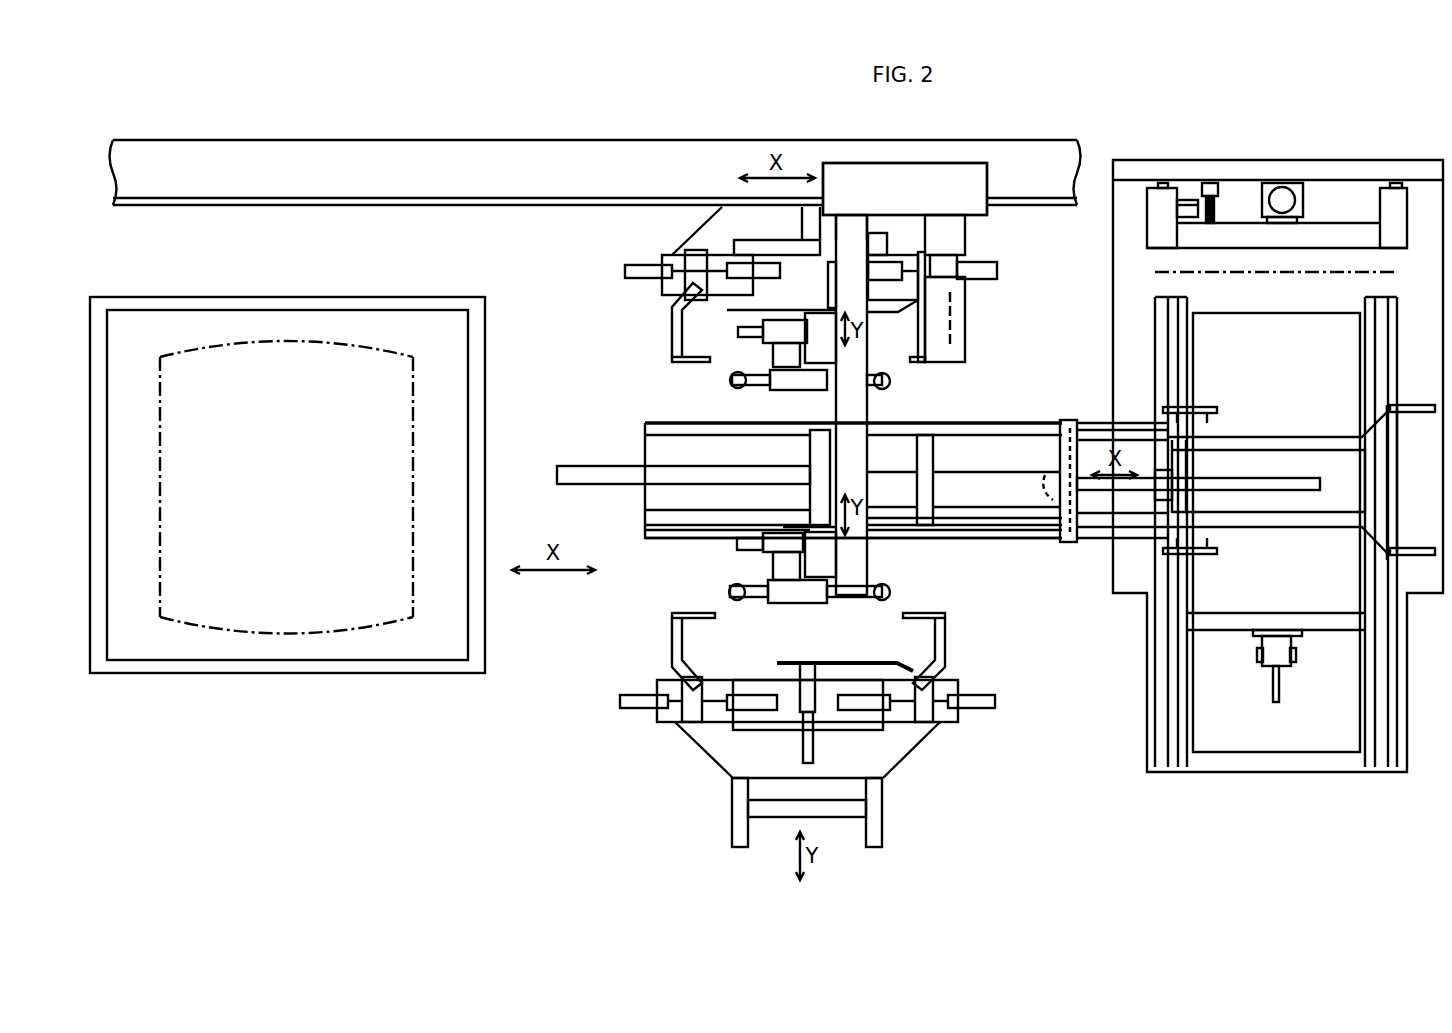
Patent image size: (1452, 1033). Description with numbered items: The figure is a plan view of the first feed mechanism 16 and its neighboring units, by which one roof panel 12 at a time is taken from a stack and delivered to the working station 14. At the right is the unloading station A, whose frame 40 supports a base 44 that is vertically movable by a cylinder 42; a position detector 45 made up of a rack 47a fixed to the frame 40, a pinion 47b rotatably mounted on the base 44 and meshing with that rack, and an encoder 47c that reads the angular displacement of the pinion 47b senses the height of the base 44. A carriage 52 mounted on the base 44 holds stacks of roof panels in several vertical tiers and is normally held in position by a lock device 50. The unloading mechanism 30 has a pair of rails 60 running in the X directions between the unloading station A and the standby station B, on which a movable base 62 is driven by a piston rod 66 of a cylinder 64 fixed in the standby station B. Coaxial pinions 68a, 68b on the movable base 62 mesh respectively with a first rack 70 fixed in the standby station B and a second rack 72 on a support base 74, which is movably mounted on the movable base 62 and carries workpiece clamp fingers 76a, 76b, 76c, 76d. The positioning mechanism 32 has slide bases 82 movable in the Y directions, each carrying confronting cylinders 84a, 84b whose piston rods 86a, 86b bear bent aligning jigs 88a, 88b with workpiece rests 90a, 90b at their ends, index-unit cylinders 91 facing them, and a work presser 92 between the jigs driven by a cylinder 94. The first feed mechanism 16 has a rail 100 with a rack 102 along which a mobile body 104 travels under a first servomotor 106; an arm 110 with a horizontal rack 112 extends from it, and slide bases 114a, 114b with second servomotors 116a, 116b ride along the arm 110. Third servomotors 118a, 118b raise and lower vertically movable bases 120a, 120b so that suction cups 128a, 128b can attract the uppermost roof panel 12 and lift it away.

The roof panel 12 is at (340, 627).
The working station 14 is at (265, 722).
The first feed mechanism 16 is at (906, 182).
The unloading mechanism 30 is at (1090, 415).
The positioning mechanism 32 is at (959, 608).
The frame 40 is at (1340, 165).
The cylinder 42 is at (1280, 187).
The base 44 is at (1400, 258).
The position detector 45 is at (1188, 190).
The rack 47a is at (1209, 183).
The pinion 47b is at (1210, 228).
The encoder 47c is at (1180, 212).
The lock device 50 is at (1300, 640).
The carriage 52 is at (1397, 285).
The rails 60 is at (913, 435).
The movable base 62 is at (1033, 525).
The cylinder 64 is at (580, 483).
The piston rod 66 is at (947, 472).
The pinion 68a is at (1053, 500).
The pinion 68b is at (1053, 490).
The first rack 70 is at (990, 533).
The second rack 72 is at (1235, 474).
The support base 74 is at (1297, 527).
The workpiece clamp finger 76a is at (1425, 400).
The workpiece clamp finger 76b is at (1432, 557).
The workpiece clamp finger 76c is at (1207, 410).
The workpiece clamp finger 76d is at (1218, 554).
The slide base 82 is at (718, 232).
The cylinder 84a is at (634, 272).
The cylinder 84b is at (987, 272).
The piston rod 86a is at (925, 722).
The piston rod 86b is at (675, 718).
The aligning jig 88a is at (940, 645).
The aligning jig 88b is at (672, 640).
The workpiece rest 90a is at (912, 613).
The workpiece rest 90b is at (701, 613).
The cylinder 91 is at (758, 705).
The work presser 92 is at (810, 675).
The cylinder 94 is at (815, 740).
The rail 100 is at (484, 155).
The rack 102 is at (526, 205).
The mobile body 104 is at (952, 178).
The first servomotor 106 is at (963, 327).
The arm 110 is at (848, 212).
The rack 112 is at (836, 415).
The slide base 114a is at (830, 565).
The slide base 114b is at (838, 347).
The second servomotor 116a is at (785, 543).
The second servomotor 116b is at (738, 332).
The third servomotor 118a is at (731, 552).
The third servomotor 118b is at (773, 355).
The vertically movable base 120a is at (810, 603).
The vertically movable base 120b is at (808, 385).
The suction cup 128a is at (740, 597).
The suction cup 128b is at (735, 385).
The unloading station A is at (1260, 791).
The standby station B is at (664, 783).